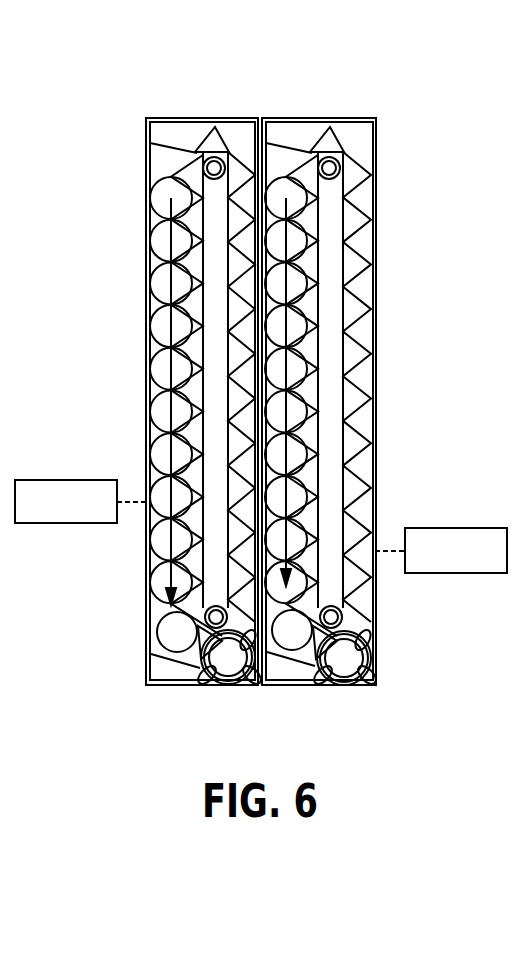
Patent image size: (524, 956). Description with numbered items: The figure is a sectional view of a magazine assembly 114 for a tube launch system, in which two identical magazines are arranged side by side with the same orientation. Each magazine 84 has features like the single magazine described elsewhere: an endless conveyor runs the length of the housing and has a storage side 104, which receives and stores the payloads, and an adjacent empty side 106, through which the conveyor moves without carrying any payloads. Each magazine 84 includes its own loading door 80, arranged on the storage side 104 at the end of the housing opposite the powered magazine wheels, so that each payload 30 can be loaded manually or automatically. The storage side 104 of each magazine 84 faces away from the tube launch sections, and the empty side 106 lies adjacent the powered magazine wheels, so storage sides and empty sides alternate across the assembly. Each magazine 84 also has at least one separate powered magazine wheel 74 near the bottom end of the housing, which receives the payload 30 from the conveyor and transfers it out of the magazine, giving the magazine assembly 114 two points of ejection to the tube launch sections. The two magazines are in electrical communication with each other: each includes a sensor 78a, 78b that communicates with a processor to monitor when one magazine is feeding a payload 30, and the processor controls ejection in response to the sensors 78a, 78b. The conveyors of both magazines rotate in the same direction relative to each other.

The magazine assembly 114 is at (112, 128).
The loading door 80 is at (167, 148).
The magazine 84 is at (143, 301).
The storage side 104 is at (154, 367).
The empty side 106 is at (367, 408).
The powered magazine wheel 74 is at (228, 650).
The payload 30 is at (344, 655).
The sensor 78a is at (455, 575).
The sensor 78b is at (65, 524).